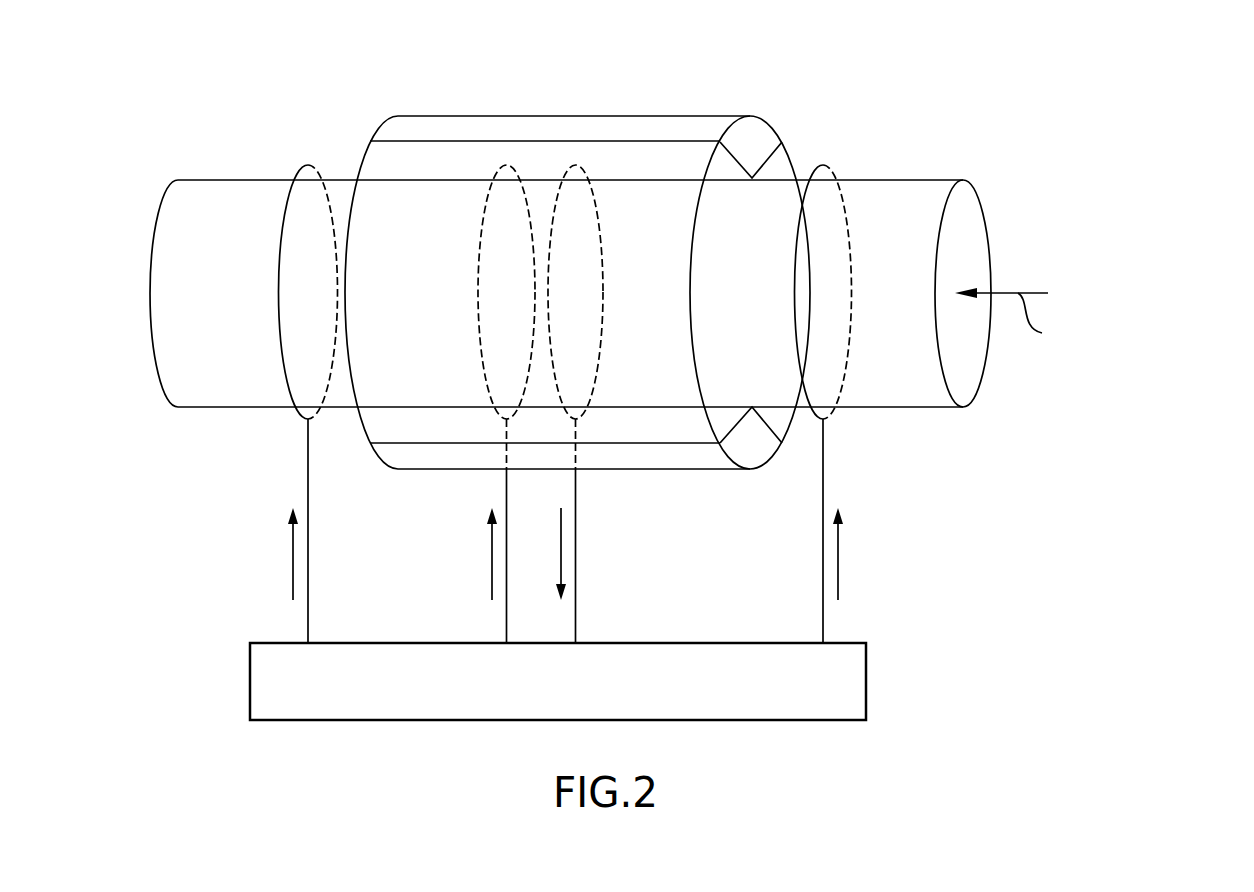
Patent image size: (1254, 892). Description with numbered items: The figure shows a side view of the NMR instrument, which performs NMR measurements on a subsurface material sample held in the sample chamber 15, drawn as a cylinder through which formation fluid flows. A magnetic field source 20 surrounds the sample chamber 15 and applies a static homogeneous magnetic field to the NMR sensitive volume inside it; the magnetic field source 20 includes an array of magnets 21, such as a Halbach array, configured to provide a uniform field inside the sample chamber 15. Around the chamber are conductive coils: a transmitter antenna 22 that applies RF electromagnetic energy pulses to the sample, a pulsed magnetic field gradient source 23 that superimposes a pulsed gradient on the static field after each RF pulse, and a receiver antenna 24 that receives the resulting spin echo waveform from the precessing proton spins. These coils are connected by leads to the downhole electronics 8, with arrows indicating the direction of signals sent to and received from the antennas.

The downhole electronics 8 is at (558, 681).
The sample chamber 15 is at (890, 407).
The magnetic field source 20 is at (438, 110).
The array of magnets 21 is at (780, 165).
The transmitter antenna 22 is at (296, 176).
The pulsed magnetic field gradient source 23 is at (478, 282).
The receiver antenna 24 is at (603, 281).